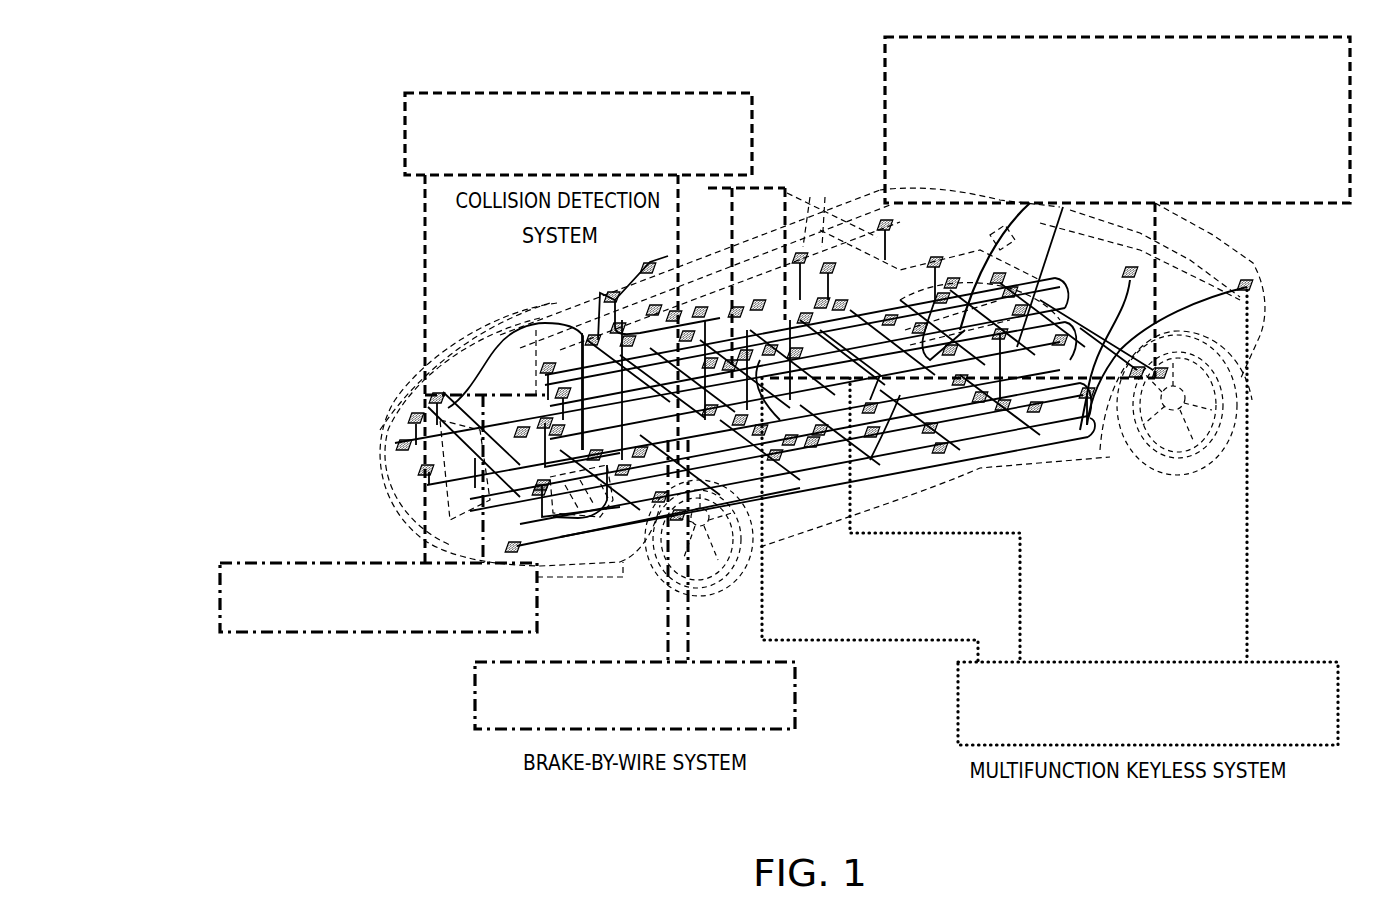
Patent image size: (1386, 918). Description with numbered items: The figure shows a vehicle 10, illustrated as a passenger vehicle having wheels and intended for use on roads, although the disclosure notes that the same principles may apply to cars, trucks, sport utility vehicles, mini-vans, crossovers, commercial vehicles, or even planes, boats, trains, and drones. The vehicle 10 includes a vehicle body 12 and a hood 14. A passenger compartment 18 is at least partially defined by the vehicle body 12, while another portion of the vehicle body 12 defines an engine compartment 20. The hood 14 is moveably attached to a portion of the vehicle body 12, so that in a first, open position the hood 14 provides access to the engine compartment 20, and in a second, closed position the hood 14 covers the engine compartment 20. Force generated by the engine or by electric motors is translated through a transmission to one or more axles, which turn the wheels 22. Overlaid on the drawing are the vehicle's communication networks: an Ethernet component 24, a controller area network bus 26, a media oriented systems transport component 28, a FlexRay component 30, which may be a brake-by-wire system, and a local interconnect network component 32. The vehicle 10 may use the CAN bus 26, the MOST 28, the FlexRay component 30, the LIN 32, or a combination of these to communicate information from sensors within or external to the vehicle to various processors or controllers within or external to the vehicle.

The vehicle 10 is at (196, 192).
The vehicle body 12 is at (792, 322).
The hood 14 is at (527, 331).
The passenger compartment 18 is at (705, 274).
The engine compartment 20 is at (368, 397).
The wheels 22 is at (655, 568).
The Ethernet component 24 is at (198, 593).
The controller area network (CAN) bus 26 is at (392, 127).
The media oriented systems transport component (MOST) 28 is at (868, 112).
The FlexRay component 30 is at (450, 692).
The local interconnect network component (LIN) 32 is at (943, 693).